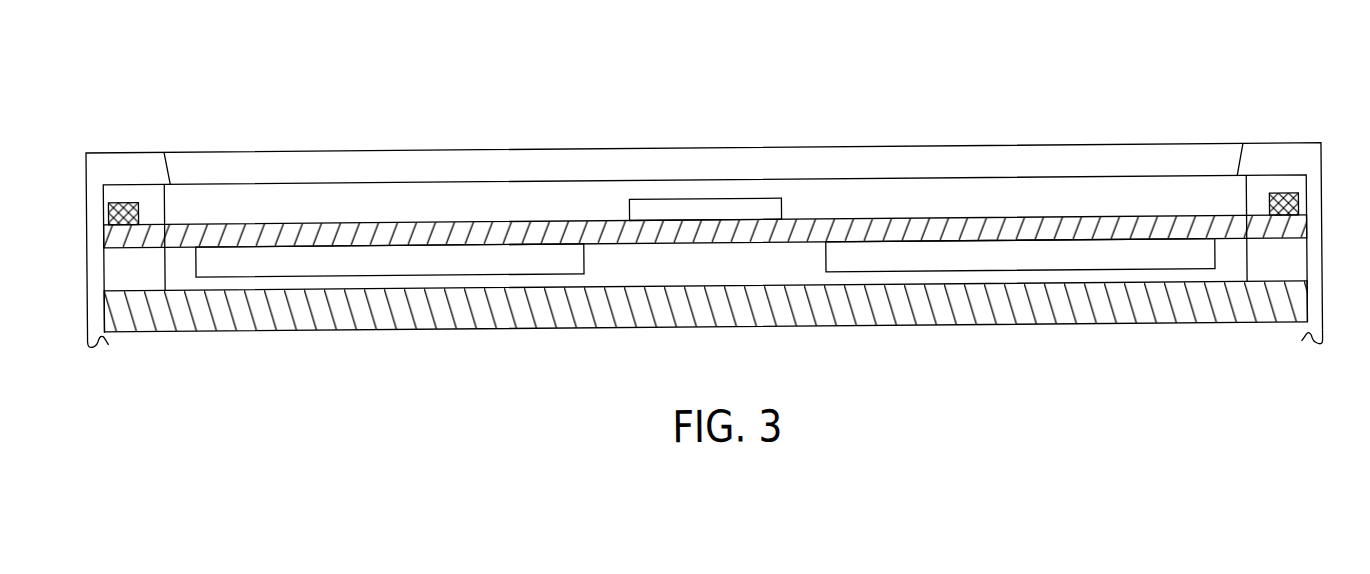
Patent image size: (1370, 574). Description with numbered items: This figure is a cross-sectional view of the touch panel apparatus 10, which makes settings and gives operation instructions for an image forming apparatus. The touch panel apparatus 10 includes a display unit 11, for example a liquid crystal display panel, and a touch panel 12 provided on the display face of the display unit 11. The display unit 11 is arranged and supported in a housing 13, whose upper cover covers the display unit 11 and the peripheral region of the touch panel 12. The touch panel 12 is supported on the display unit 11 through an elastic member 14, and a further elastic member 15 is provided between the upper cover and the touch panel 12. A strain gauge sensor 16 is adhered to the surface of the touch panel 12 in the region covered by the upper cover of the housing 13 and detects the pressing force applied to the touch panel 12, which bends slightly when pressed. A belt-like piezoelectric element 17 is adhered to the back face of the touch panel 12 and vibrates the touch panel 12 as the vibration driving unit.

The touch panel apparatus 10 is at (956, 112).
The display unit 11 is at (803, 335).
The touch panel 12 is at (889, 226).
The housing 13 is at (123, 153).
The elastic member 14 is at (120, 268).
The elastic member 15 is at (120, 193).
The strain gauge sensor 16 is at (138, 218).
The piezoelectric element 17 is at (825, 271).